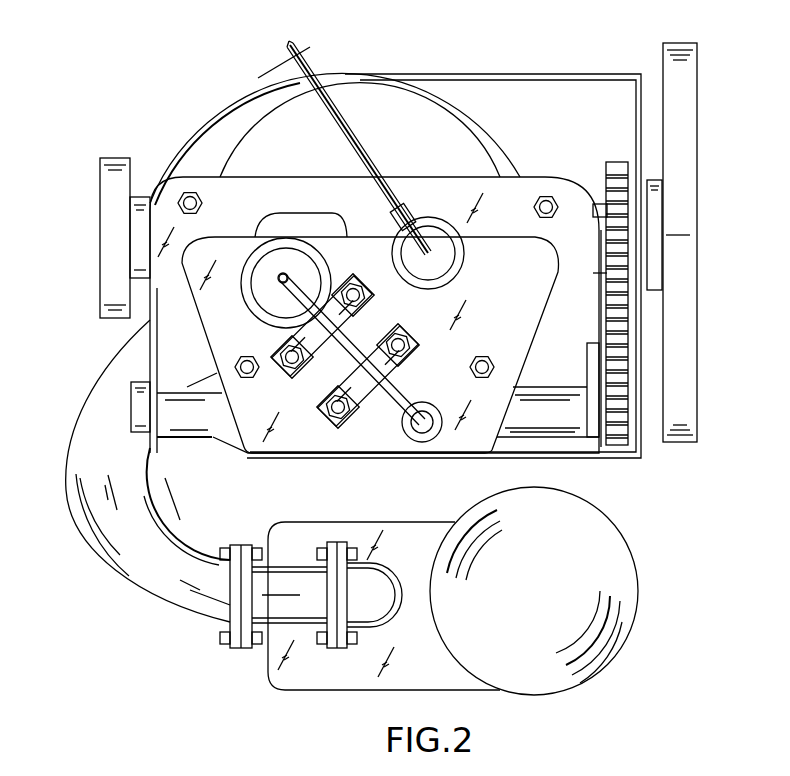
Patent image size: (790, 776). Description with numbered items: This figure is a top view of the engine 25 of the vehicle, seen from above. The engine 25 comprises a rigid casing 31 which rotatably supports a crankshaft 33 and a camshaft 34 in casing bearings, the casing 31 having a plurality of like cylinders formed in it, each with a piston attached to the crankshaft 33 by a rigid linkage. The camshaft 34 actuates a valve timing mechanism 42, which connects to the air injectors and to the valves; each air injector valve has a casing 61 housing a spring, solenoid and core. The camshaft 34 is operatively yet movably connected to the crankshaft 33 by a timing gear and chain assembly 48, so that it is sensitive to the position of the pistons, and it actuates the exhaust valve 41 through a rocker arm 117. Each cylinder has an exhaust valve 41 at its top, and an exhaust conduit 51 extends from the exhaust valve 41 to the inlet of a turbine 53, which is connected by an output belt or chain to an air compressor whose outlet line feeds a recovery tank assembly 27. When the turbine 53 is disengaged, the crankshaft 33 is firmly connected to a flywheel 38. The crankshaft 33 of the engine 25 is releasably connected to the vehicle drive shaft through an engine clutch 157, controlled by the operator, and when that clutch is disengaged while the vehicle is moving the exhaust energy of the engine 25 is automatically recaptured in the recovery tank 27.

The engine 25 is at (157, 612).
The recovery tank assembly 27 is at (607, 563).
The rigid casing 31 is at (547, 193).
The crankshaft 33 is at (598, 207).
The camshaft 34 is at (520, 437).
The flywheel 38 is at (672, 88).
The exhaust valve 41 is at (290, 255).
The valve timing mechanism 42 is at (140, 402).
The timing gear and chain assembly 48 is at (618, 355).
The exhaust conduit 51 is at (145, 525).
The turbine 53 is at (350, 538).
The casing 61 is at (428, 220).
The rocker arm 117 is at (402, 400).
The engine clutch 157 is at (113, 177).